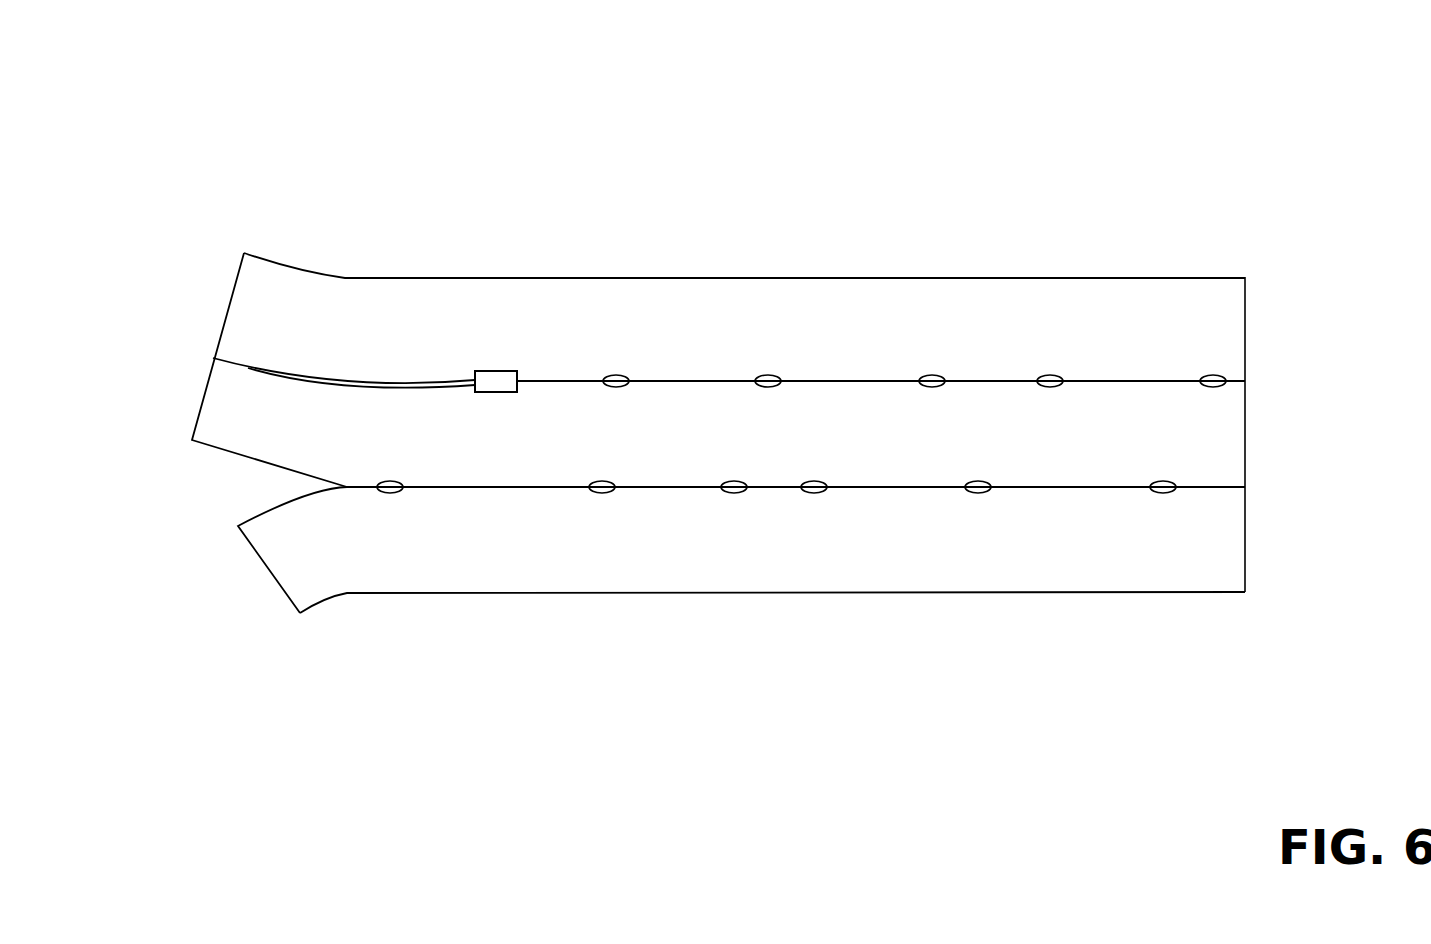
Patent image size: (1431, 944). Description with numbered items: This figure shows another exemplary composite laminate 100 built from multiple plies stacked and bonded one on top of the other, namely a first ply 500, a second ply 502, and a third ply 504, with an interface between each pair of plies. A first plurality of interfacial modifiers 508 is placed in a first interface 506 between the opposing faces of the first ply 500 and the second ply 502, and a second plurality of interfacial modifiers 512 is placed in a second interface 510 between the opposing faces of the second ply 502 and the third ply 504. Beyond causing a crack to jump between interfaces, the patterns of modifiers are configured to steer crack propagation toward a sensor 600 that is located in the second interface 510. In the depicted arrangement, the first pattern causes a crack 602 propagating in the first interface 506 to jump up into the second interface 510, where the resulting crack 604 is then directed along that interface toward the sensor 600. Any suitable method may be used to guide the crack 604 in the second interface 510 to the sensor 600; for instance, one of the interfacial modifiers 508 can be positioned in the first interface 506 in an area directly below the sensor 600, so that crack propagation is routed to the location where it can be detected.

The composite laminate 100 is at (935, 103).
The first ply 500 is at (458, 593).
The second ply 502 is at (198, 413).
The third ply 504 is at (542, 278).
The first interface 506 is at (1025, 488).
The first plurality of interfacial modifiers 508 is at (388, 493).
The second interface 510 is at (995, 382).
The second plurality of interfacial modifiers 512 is at (762, 375).
The sensor 600 is at (492, 371).
The crack 602 is at (254, 498).
The crack 604 is at (355, 381).